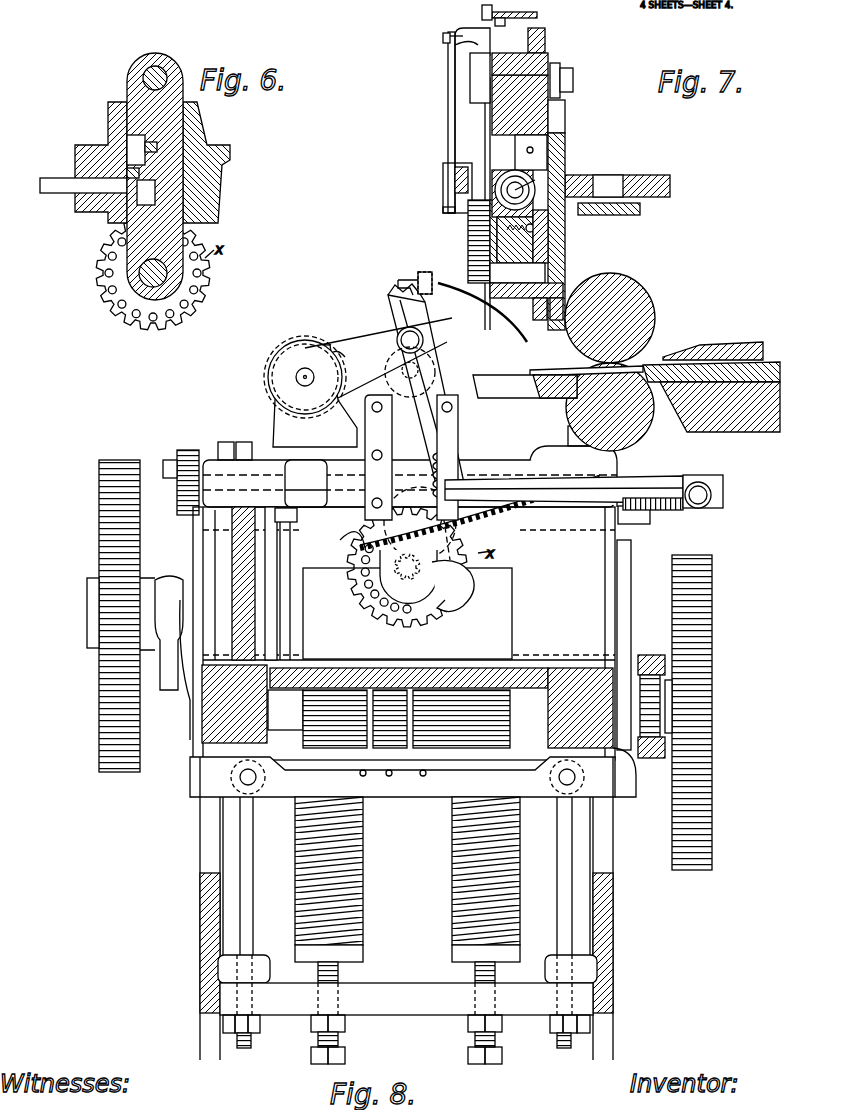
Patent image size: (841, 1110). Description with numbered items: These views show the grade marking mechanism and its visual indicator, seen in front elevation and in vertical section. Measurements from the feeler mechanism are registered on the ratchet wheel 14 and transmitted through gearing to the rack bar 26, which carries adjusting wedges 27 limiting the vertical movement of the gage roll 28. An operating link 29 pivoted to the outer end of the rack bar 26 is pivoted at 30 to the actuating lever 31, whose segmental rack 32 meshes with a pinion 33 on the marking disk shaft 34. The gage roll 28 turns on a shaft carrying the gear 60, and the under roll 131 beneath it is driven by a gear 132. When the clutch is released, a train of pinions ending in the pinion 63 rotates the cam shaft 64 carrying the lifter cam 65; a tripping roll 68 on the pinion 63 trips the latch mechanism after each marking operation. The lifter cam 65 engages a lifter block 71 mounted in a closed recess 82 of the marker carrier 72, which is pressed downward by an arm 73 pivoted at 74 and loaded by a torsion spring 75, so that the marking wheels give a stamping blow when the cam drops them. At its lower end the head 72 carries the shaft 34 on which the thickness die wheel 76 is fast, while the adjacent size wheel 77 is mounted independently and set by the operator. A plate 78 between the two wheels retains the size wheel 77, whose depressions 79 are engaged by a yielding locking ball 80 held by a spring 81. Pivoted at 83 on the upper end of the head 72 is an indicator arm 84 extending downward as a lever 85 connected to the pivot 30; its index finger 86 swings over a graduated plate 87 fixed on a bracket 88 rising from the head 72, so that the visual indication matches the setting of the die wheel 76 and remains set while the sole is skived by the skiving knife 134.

In FIG. 8, the ratchet wheel 14 is at (408, 576).
In FIG. 8, the rack bar 26 is at (690, 509).
In FIG. 8, the adjusting wedges 27 is at (292, 516).
In FIG. 8, the gage roll 28 is at (651, 292).
In FIG. 8, the operating link 29 is at (648, 478).
In FIG. 7, the pivot 30 is at (457, 184).
In FIG. 8, the pivot 30 is at (450, 455).
In FIG. 7, the actuating lever 31 is at (475, 142).
In FIG. 8, the actuating lever 31 is at (480, 511).
In FIG. 7, the segmental rack 32 is at (468, 235).
In FIG. 8, the segmental rack 32 is at (356, 556).
In FIG. 7, the pinion 33 is at (473, 262).
In FIG. 8, the pinion 33 is at (372, 585).
In FIG. 6, the marking disk shaft 34 is at (166, 270).
In FIG. 7, the marking disk shaft 34 is at (531, 272).
In FIG. 8, the gear 60 is at (99, 513).
In FIG. 8, the pinion 63 is at (188, 450).
In FIG. 6, the cam shaft 64 is at (75, 185).
In FIG. 7, the cam shaft 64 is at (518, 190).
In FIG. 8, the cam shaft 64 is at (312, 478).
In FIG. 6, the lifter cam 65 is at (152, 192).
In FIG. 7, the lifter cam 65 is at (536, 163).
In FIG. 8, the lifter cam 65 is at (375, 462).
In FIG. 8, the tripping roll 68 is at (168, 462).
In FIG. 6, the lifter block 71 is at (127, 140).
In FIG. 7, the lifter block 71 is at (556, 150).
In FIG. 8, the lifter block 71 is at (392, 432).
In FIG. 6, the marker carrier 72 is at (178, 123).
In FIG. 7, the marker carrier 72 is at (533, 120).
In FIG. 7, the arm 73 is at (546, 45).
In FIG. 8, the arm 73 is at (366, 334).
In FIG. 8, the pivot 74 is at (298, 370).
In FIG. 8, the torsion spring 75 is at (340, 356).
In FIG. 6, the thickness die wheel 76 is at (103, 257).
In FIG. 7, the thickness die wheel 76 is at (548, 240).
In FIG. 8, the thickness die wheel 76 is at (462, 600).
In FIG. 6, the size wheel 77 is at (104, 283).
In FIG. 7, the size wheel 77 is at (548, 250).
In FIG. 8, the size wheel 77 is at (433, 613).
In FIG. 7, the plate 78 is at (580, 212).
In FIG. 8, the depressions 79 is at (397, 610).
In FIG. 7, the locking ball 80 is at (517, 273).
In FIG. 7, the spring 81 is at (492, 270).
In FIG. 7, the closed recess 82 is at (487, 145).
In FIG. 7, the pivot 83 is at (442, 42).
In FIG. 8, the pivot 83 is at (400, 340).
In FIG. 7, the indicator arm 84 is at (445, 37).
In FIG. 8, the indicator arm 84 is at (410, 280).
In FIG. 7, the lever 85 is at (449, 133).
In FIG. 8, the lever 85 is at (447, 424).
In FIG. 7, the index finger 86 is at (482, 10).
In FIG. 8, the index finger 86 is at (425, 272).
In FIG. 7, the graduated plate 87 is at (537, 13).
In FIG. 8, the graduated plate 87 is at (484, 300).
In FIG. 7, the bracket 88 is at (505, 22).
In FIG. 8, the bracket 88 is at (406, 293).
In FIG. 8, the under roll 131 is at (640, 433).
In FIG. 8, the gear 132 is at (712, 809).
In FIG. 8, the skiving knife 134 is at (660, 360).